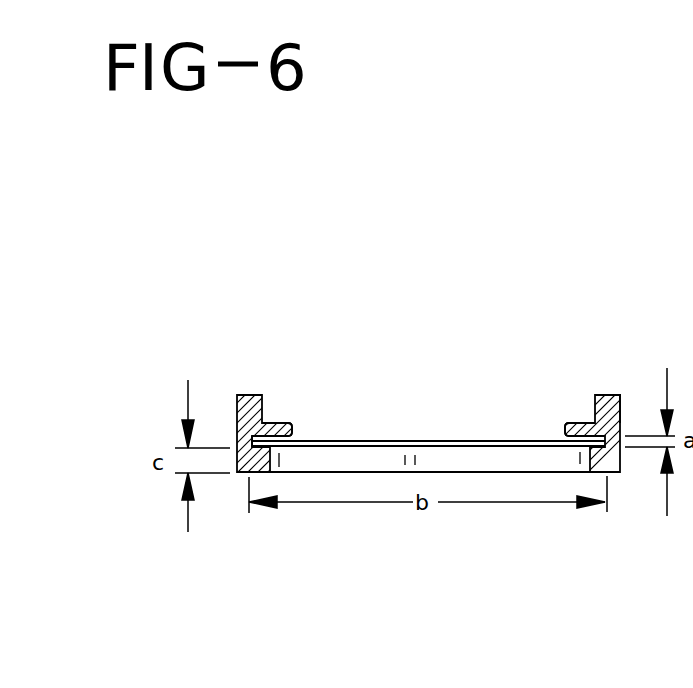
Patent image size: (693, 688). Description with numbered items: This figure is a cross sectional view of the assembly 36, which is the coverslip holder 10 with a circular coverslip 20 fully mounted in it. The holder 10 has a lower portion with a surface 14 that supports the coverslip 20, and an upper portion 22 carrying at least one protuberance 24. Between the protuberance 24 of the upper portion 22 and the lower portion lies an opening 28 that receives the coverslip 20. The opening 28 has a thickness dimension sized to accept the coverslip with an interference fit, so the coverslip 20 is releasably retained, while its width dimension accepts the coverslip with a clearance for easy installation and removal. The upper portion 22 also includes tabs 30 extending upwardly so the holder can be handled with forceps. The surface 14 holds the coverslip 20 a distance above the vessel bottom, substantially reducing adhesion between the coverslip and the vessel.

The coverslip holder 10 is at (243, 472).
The surface 14 is at (410, 441).
The coverslip 20 is at (487, 441).
The upper portion 22 is at (621, 400).
The protuberance 24 is at (276, 423).
The opening 28 is at (262, 442).
The tab 30 is at (601, 395).
The assembly 36 is at (242, 357).